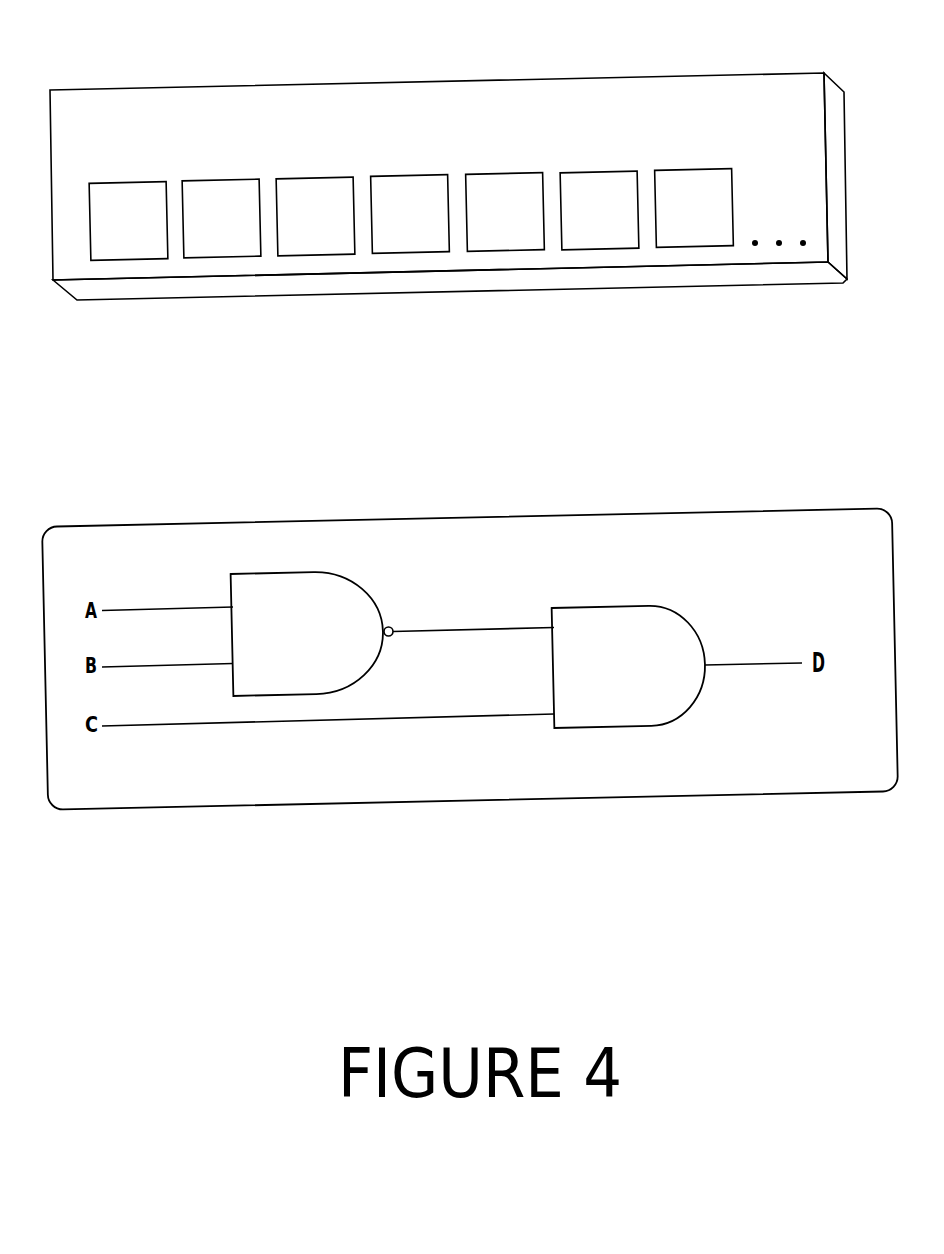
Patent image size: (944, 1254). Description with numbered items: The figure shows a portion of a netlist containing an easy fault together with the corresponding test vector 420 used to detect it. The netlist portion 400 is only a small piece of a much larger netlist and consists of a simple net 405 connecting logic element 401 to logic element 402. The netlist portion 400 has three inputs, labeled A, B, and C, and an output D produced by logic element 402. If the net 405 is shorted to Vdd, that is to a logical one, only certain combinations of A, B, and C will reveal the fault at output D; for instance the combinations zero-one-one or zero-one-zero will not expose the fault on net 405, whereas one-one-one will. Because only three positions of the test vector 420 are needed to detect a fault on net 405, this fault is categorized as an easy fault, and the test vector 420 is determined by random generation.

The test vector 420 is at (727, 72).
The netlist portion 400 is at (758, 503).
The logic element 401 is at (323, 649).
The logic element 402 is at (637, 688).
The net 405 is at (458, 628).